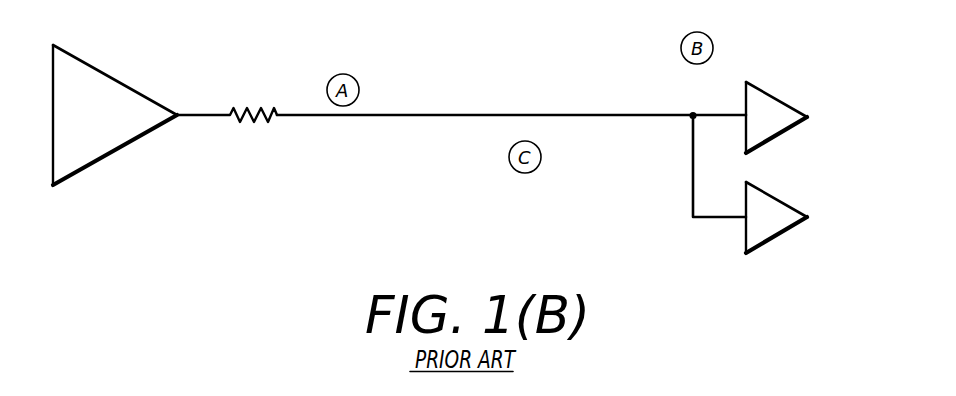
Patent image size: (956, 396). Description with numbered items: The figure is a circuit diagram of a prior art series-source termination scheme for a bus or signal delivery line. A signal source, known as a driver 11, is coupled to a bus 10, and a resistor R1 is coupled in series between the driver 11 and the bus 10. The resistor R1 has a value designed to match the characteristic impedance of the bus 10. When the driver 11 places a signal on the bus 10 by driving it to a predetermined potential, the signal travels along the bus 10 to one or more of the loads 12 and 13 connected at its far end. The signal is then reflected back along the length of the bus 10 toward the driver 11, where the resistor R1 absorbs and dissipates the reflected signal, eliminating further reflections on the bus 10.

The bus 10 is at (468, 106).
The driver 11 is at (93, 68).
The load 12 is at (790, 106).
The load 13 is at (790, 228).
The resistor R1 is at (248, 122).